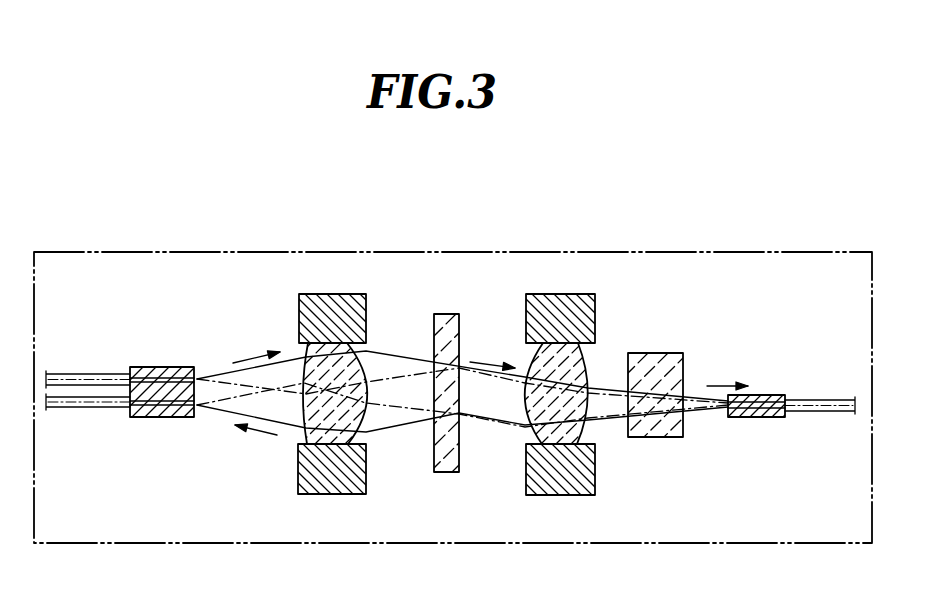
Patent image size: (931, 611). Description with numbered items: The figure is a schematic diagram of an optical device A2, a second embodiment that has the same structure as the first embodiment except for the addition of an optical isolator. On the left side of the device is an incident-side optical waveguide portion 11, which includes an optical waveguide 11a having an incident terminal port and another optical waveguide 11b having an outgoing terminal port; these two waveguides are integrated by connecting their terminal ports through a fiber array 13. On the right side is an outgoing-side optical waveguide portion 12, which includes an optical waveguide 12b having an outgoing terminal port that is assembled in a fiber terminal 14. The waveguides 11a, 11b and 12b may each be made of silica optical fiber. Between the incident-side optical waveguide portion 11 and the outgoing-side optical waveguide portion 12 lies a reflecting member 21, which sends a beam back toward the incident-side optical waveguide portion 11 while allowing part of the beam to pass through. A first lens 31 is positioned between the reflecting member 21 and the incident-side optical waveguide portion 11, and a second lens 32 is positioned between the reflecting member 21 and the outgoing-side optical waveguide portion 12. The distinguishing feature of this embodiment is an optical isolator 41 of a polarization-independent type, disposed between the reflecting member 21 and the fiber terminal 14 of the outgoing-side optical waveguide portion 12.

The optical device A2 is at (465, 252).
The incident-side optical waveguide portion 11 is at (140, 376).
The optical waveguide 11a is at (85, 374).
The optical waveguide 11b is at (98, 408).
The fiber array 13 is at (165, 368).
The first lens 31 is at (310, 358).
The reflecting member 21 is at (435, 340).
The second lens 32 is at (538, 365).
The optical isolator 41 is at (663, 358).
The outgoing-side optical waveguide portion 12 is at (792, 351).
The fiber terminal 14 is at (767, 395).
The optical waveguide 12b is at (807, 400).